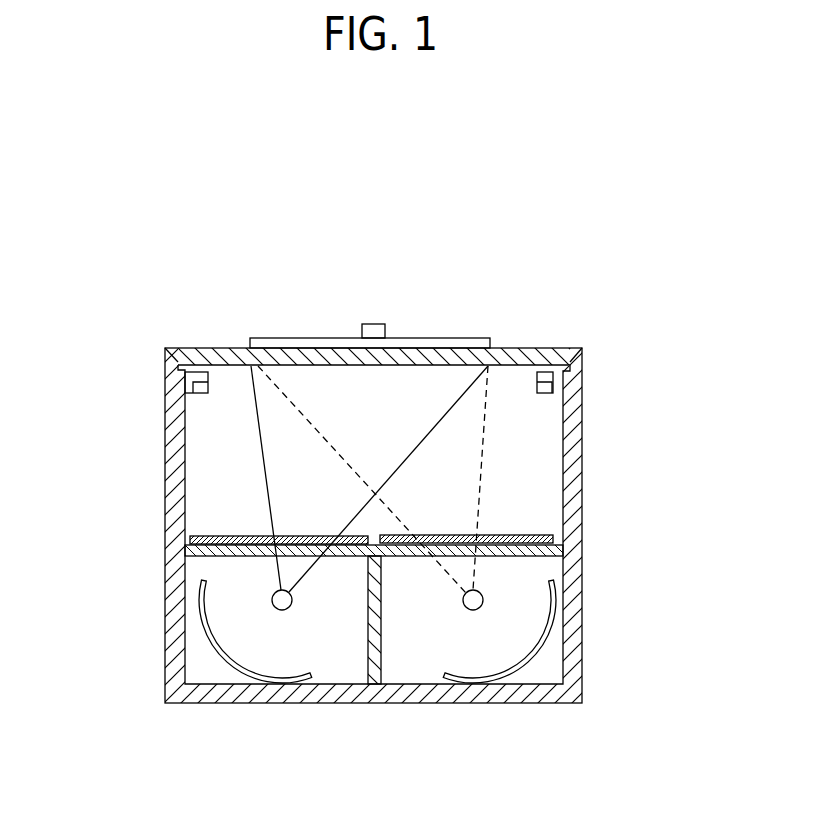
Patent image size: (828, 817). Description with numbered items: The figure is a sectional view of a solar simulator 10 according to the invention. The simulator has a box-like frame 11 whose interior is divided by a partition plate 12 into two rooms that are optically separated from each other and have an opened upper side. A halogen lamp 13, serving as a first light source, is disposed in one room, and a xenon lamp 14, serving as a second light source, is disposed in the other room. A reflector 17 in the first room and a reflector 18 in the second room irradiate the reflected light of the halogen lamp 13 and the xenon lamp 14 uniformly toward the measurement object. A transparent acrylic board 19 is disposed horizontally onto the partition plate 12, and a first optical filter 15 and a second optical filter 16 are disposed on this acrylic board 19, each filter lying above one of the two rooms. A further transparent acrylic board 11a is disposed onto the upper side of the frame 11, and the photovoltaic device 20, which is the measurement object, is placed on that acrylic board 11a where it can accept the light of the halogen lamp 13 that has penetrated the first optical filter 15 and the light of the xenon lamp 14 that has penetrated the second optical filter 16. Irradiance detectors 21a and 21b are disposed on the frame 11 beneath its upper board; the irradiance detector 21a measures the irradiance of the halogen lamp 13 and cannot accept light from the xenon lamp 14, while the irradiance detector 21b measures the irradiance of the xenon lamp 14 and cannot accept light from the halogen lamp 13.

The solar simulator 10 is at (326, 274).
The frame 11 is at (582, 493).
The transparent acrylic board 11a is at (512, 347).
The partition plate 12 is at (381, 612).
The halogen lamp 13 is at (282, 612).
The xenon lamp 14 is at (467, 608).
The first optical filter 15 is at (228, 535).
The second optical filter 16 is at (522, 535).
The reflector 17 is at (218, 650).
The reflector 18 is at (532, 653).
The transparent acrylic board 19 is at (333, 557).
The photovoltaic device 20 is at (407, 346).
The irradiance detector 21a is at (198, 383).
The irradiance detector 21b is at (553, 382).